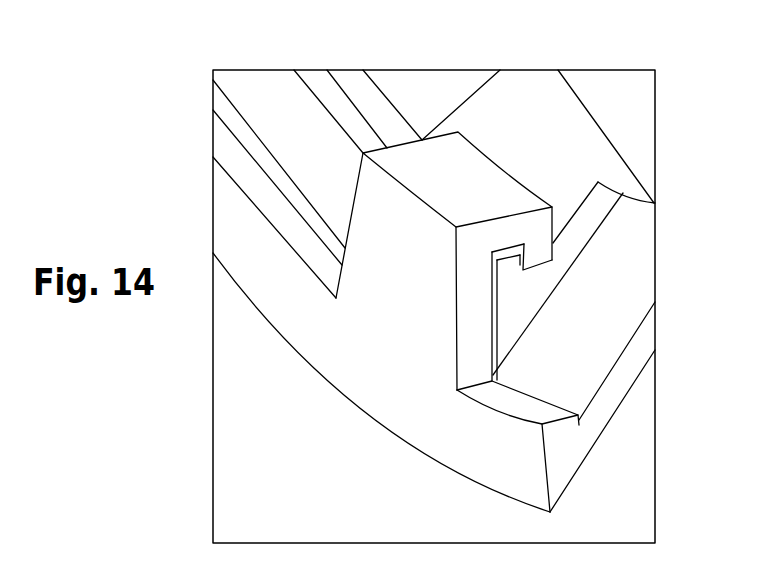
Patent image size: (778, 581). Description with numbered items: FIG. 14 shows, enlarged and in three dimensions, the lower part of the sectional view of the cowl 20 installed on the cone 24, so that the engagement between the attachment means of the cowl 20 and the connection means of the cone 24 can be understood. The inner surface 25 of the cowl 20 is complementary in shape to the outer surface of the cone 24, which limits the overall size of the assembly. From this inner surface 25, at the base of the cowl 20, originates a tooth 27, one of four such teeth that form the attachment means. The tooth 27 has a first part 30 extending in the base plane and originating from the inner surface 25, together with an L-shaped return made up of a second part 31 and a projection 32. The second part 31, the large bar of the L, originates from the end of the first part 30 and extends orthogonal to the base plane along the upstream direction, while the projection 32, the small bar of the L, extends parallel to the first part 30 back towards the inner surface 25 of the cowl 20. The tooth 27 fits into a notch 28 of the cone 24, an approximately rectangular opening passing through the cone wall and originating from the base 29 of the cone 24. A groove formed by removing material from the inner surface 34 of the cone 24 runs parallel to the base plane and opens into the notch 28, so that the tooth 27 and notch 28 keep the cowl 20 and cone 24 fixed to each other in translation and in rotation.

The cowl 20 is at (658, 243).
The cone 24 is at (658, 170).
The inner surface 25 is at (602, 333).
The tooth 27 is at (427, 363).
The notch 28 is at (577, 383).
The base of the cone 29 is at (278, 105).
The first part 30 is at (393, 292).
The second part 31 is at (503, 232).
The projection 32 is at (545, 243).
The inner surface of the cone 34 is at (382, 107).